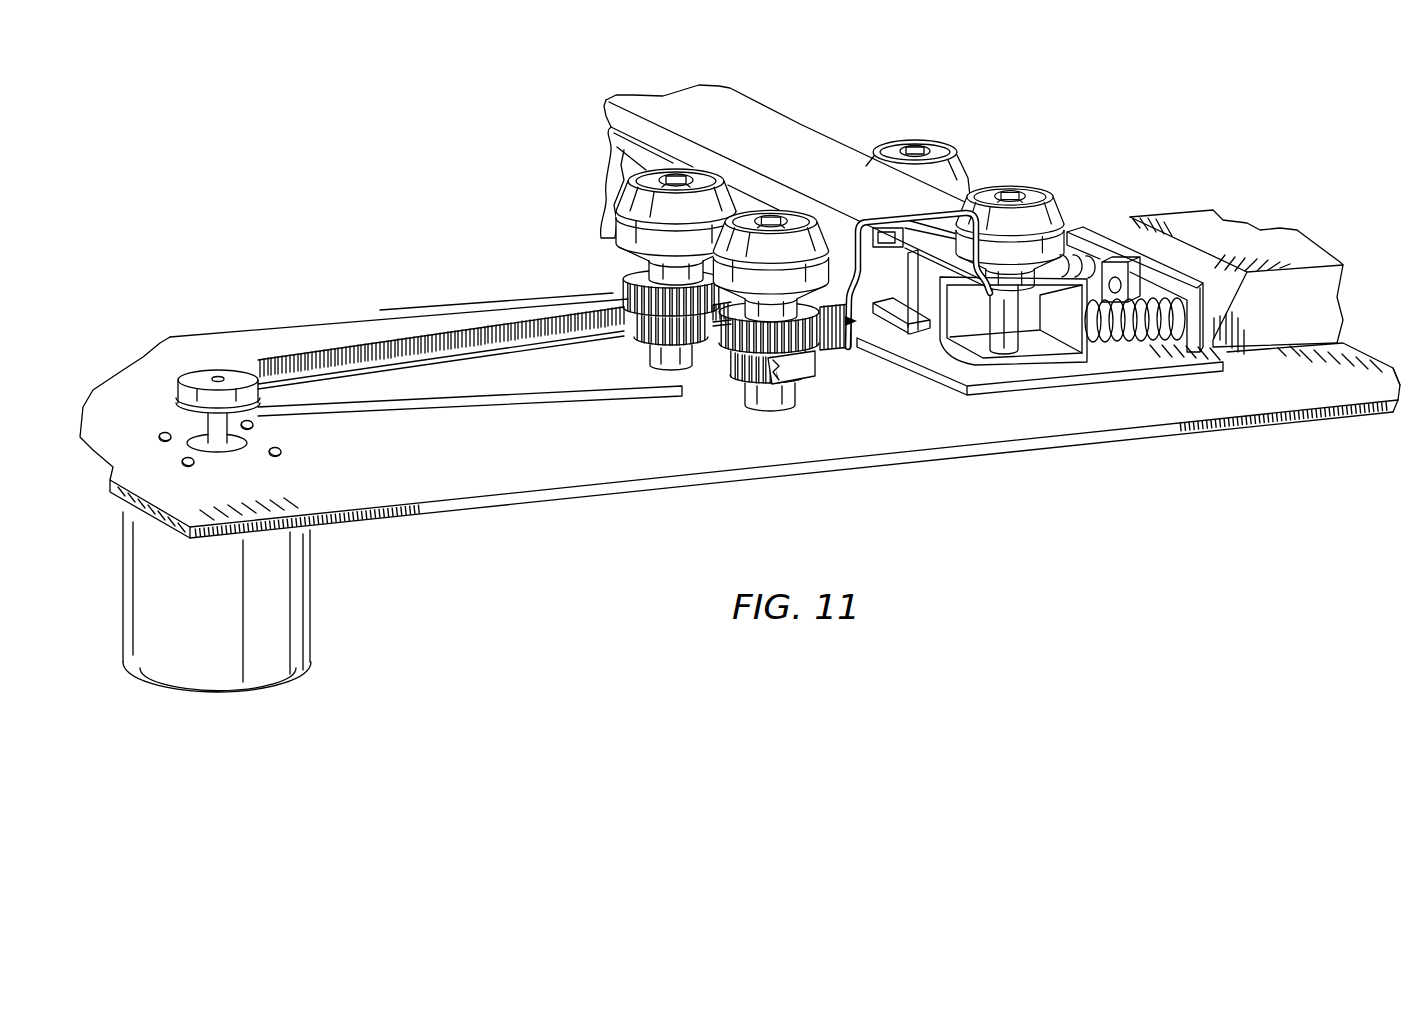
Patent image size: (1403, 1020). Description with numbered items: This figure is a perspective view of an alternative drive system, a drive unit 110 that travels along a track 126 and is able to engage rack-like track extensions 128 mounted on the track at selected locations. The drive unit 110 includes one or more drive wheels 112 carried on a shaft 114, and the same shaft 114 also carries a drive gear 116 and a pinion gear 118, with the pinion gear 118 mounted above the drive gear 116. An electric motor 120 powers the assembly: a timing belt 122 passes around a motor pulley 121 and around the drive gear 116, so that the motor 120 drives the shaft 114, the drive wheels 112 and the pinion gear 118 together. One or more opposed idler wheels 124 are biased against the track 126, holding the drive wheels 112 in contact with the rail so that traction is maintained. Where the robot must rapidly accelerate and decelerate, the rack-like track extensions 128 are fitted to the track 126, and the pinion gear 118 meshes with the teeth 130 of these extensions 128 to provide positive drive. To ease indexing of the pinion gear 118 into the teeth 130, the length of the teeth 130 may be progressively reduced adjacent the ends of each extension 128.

The drive unit 110 is at (520, 157).
The drive wheels 112 is at (826, 220).
The shaft 114 is at (646, 275).
The drive gear 116 is at (722, 355).
The pinion gear 118 is at (710, 345).
The electric motor 120 is at (217, 626).
The motor pulley 121 is at (205, 375).
The timing belt 122 is at (567, 390).
The idler wheels 124 is at (958, 170).
The track 126 is at (813, 135).
The rack-like track extensions 128 is at (858, 340).
The teeth 130 is at (827, 350).